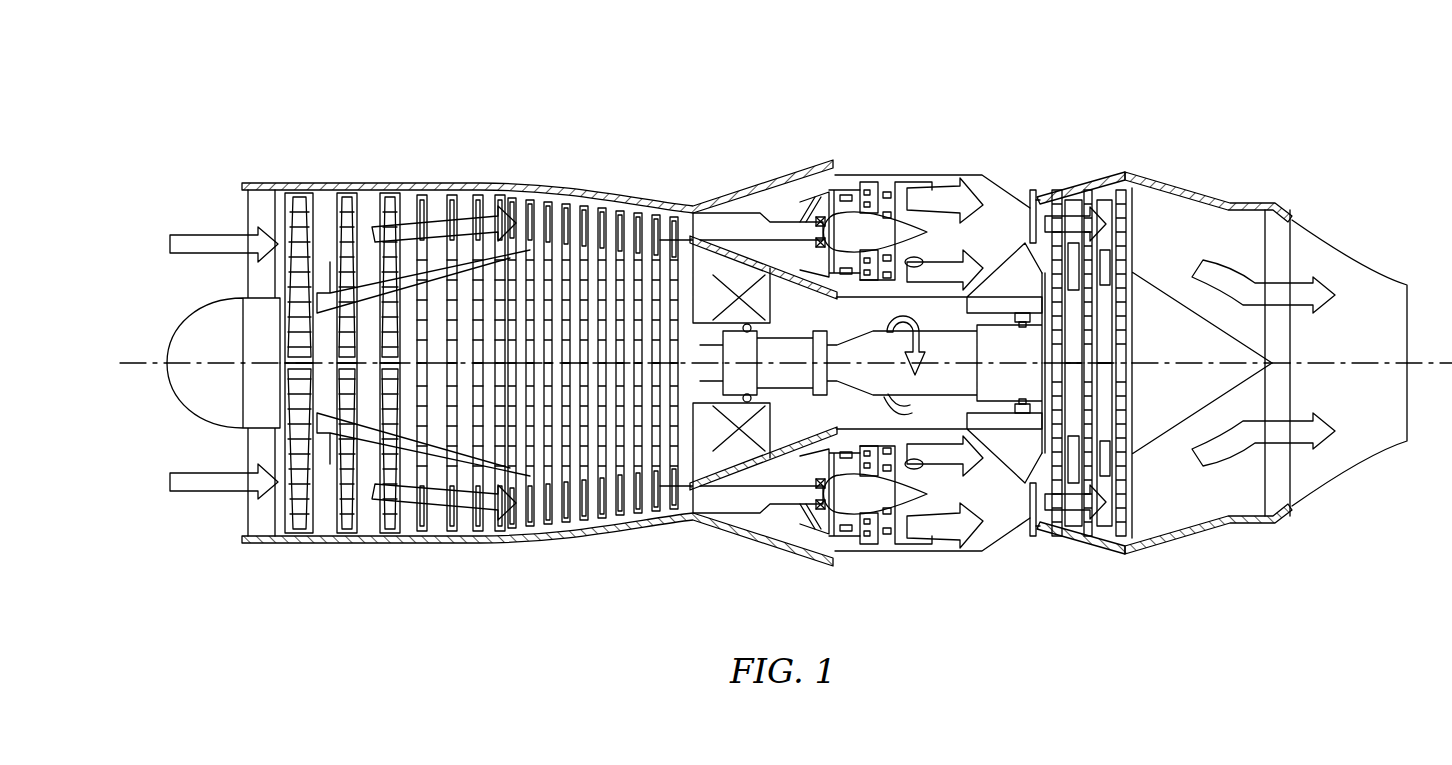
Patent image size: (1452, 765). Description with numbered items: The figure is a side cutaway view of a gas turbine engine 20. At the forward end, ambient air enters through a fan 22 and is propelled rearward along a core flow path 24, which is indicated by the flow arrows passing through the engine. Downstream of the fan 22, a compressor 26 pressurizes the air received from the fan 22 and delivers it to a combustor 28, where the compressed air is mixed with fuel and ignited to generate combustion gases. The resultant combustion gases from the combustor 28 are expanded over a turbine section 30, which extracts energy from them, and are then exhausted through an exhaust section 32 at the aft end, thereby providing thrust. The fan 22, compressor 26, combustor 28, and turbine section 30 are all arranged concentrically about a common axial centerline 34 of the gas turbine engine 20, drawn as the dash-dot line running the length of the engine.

The gas turbine engine 20 is at (1268, 129).
The fan 22 is at (238, 217).
The core flow path 24 is at (438, 223).
The compressor 26 is at (532, 553).
The combustor 28 is at (873, 497).
The turbine section 30 is at (1076, 553).
The exhaust section 32 is at (1287, 525).
The axial centerline 34 is at (127, 360).